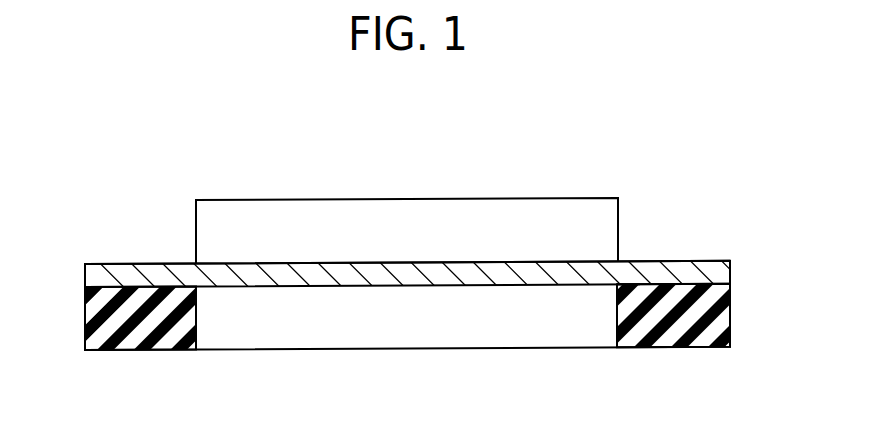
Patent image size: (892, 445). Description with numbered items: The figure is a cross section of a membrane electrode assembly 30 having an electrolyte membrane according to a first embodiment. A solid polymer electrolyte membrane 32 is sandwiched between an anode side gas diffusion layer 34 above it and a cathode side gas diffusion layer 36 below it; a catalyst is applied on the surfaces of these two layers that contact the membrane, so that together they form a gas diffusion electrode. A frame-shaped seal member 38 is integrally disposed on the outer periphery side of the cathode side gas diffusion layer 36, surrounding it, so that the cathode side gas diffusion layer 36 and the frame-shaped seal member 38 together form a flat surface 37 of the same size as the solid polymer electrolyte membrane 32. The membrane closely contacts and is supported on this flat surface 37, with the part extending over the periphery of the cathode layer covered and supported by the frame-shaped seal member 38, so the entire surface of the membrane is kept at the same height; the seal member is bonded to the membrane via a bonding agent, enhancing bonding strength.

The membrane electrode assembly 30 is at (653, 180).
The solid polymer electrolyte membrane 32 is at (137, 272).
The anode side gas diffusion layer 34 is at (425, 210).
The cathode side gas diffusion layer 36 is at (415, 328).
The flat surface 37 is at (629, 280).
The frame-shaped seal member 38 is at (119, 350).